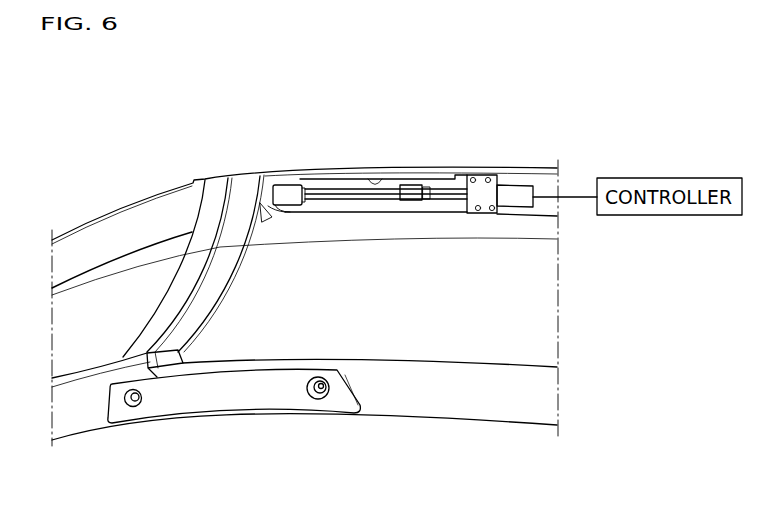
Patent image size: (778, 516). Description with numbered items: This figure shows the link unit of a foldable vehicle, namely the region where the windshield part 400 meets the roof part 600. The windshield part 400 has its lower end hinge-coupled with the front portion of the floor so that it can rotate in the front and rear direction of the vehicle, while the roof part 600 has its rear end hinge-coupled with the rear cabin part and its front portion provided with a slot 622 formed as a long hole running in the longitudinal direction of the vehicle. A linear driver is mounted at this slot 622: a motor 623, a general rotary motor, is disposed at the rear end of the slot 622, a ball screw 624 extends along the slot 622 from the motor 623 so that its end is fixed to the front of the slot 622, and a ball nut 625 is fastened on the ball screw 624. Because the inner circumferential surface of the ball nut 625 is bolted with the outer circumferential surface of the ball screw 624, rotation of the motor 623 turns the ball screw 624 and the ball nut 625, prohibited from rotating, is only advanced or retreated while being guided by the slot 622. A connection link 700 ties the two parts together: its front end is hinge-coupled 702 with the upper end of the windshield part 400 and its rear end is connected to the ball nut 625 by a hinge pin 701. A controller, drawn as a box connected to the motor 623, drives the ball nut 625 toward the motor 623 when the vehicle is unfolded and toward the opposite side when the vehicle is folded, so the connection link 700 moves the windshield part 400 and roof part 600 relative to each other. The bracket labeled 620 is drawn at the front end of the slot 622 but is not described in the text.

The windshield part 400 is at (138, 213).
The roof part 600 is at (424, 140).
The motor 620 is at (296, 168).
The slot 622 is at (380, 168).
The motor 623 is at (515, 168).
The ball screw 624 is at (453, 168).
The ball nut 625 is at (413, 168).
The connection link 700 is at (225, 400).
The hinge pin 701 is at (318, 400).
The hinge coupling 702 is at (132, 406).